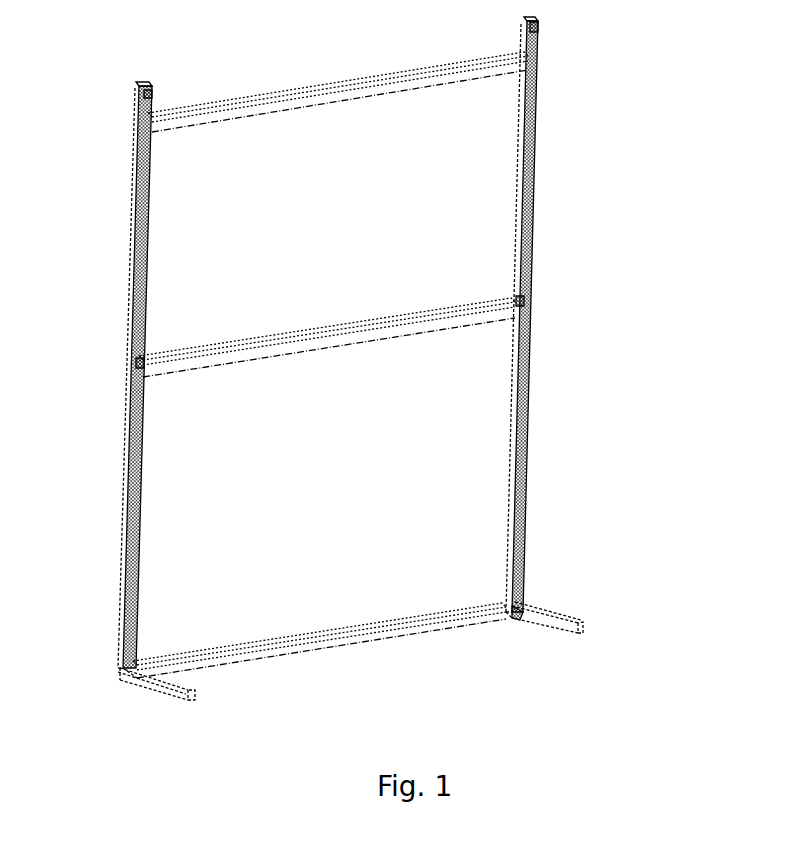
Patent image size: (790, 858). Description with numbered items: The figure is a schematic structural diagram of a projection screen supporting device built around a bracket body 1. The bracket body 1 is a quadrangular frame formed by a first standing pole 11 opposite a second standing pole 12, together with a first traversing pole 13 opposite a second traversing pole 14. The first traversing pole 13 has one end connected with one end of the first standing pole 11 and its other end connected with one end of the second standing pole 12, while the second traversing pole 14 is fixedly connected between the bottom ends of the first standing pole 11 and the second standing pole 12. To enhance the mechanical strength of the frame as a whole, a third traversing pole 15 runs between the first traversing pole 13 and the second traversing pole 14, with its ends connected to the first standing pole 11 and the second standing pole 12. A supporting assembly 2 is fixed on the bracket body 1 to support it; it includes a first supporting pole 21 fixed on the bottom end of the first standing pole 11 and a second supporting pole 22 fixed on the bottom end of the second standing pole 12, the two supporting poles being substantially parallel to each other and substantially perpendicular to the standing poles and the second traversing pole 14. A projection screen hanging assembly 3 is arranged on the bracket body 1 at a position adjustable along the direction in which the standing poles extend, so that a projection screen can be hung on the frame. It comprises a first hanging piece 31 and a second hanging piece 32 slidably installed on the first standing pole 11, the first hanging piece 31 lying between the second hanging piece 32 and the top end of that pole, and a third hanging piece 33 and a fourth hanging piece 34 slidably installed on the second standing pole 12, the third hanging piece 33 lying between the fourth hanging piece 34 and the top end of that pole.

The bracket body 1 is at (133, 263).
The first standing pole 11 is at (133, 439).
The second standing pole 12 is at (527, 415).
The first traversing pole 13 is at (328, 99).
The second traversing pole 14 is at (332, 642).
The third traversing pole 15 is at (318, 338).
The supporting assembly 2 is at (392, 694).
The first supporting pole 21 is at (193, 697).
The second supporting pole 22 is at (548, 620).
The projection screen hanging assembly 3 is at (372, 190).
The first hanging piece 31 is at (148, 95).
The second hanging piece 32 is at (143, 363).
The third hanging piece 33 is at (535, 30).
The fourth hanging piece 34 is at (525, 300).